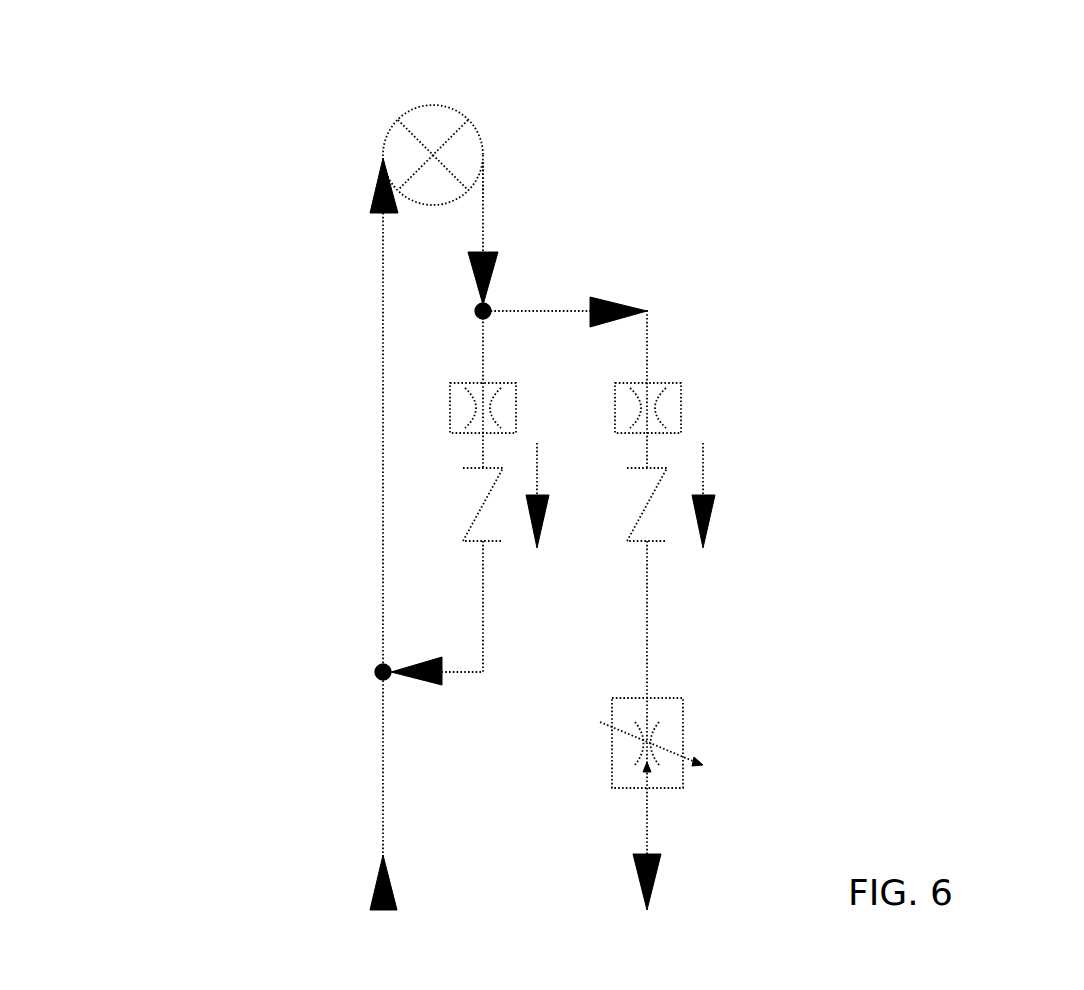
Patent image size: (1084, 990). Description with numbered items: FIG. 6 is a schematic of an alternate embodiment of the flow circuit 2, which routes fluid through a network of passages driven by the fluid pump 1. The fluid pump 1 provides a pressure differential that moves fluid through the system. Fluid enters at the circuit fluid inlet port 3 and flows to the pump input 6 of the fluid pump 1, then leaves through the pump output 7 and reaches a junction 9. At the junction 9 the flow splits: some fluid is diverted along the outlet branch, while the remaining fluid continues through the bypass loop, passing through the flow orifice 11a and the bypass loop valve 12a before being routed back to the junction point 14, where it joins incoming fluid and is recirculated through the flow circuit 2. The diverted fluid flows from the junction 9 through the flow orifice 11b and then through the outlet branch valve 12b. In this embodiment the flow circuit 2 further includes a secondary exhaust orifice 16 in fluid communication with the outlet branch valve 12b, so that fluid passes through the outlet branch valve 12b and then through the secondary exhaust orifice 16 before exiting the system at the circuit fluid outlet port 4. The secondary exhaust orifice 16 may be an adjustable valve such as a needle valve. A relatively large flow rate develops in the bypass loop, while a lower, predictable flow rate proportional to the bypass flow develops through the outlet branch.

The fluid pump 1 is at (404, 106).
The flow circuit 2 is at (211, 512).
The circuit fluid inlet port 3 is at (357, 903).
The circuit fluid outlet port 4 is at (666, 903).
The pump input 6 is at (370, 160).
The pump output 7 is at (503, 162).
The junction 9 is at (508, 308).
The flow orifice 11a is at (435, 388).
The flow orifice 11b is at (696, 390).
The bypass loop valve 12a is at (466, 510).
The outlet branch valve 12b is at (652, 521).
The junction point 14 is at (361, 673).
The secondary exhaust orifice 16 is at (698, 719).